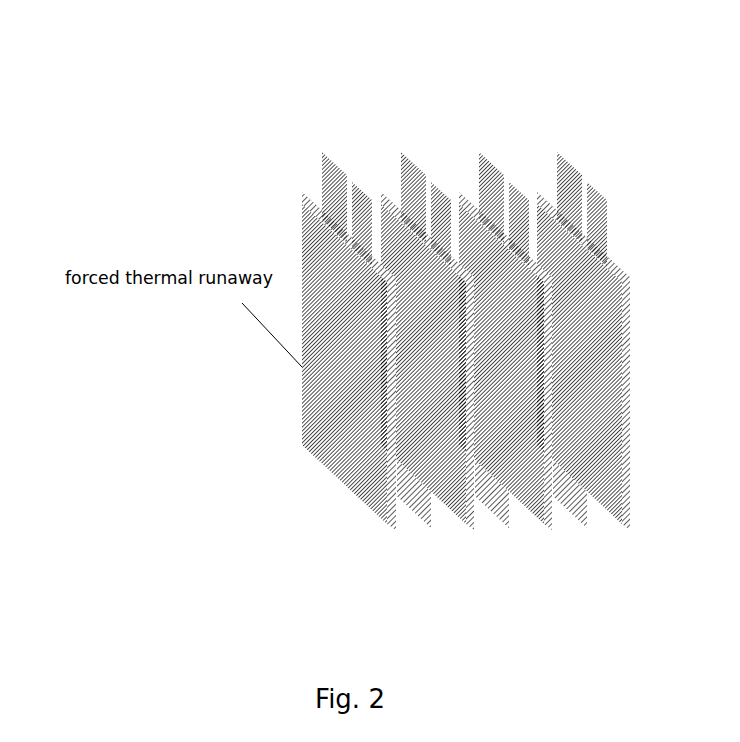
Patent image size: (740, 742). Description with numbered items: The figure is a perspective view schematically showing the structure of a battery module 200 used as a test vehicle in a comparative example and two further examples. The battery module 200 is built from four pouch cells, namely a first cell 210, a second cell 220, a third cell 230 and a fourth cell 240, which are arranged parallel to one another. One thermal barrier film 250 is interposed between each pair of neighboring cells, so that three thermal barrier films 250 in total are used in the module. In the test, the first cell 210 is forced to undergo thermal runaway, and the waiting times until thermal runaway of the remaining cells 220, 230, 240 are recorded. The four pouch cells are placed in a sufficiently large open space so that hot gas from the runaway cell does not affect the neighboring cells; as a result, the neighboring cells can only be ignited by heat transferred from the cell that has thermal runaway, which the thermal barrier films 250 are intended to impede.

The battery module 200 is at (128, 49).
The cell 1 210 is at (305, 193).
The cell 2 220 is at (385, 193).
The cell 3 230 is at (460, 190).
The cell 4 240 is at (542, 192).
The thermal barrier film 250 is at (588, 533).